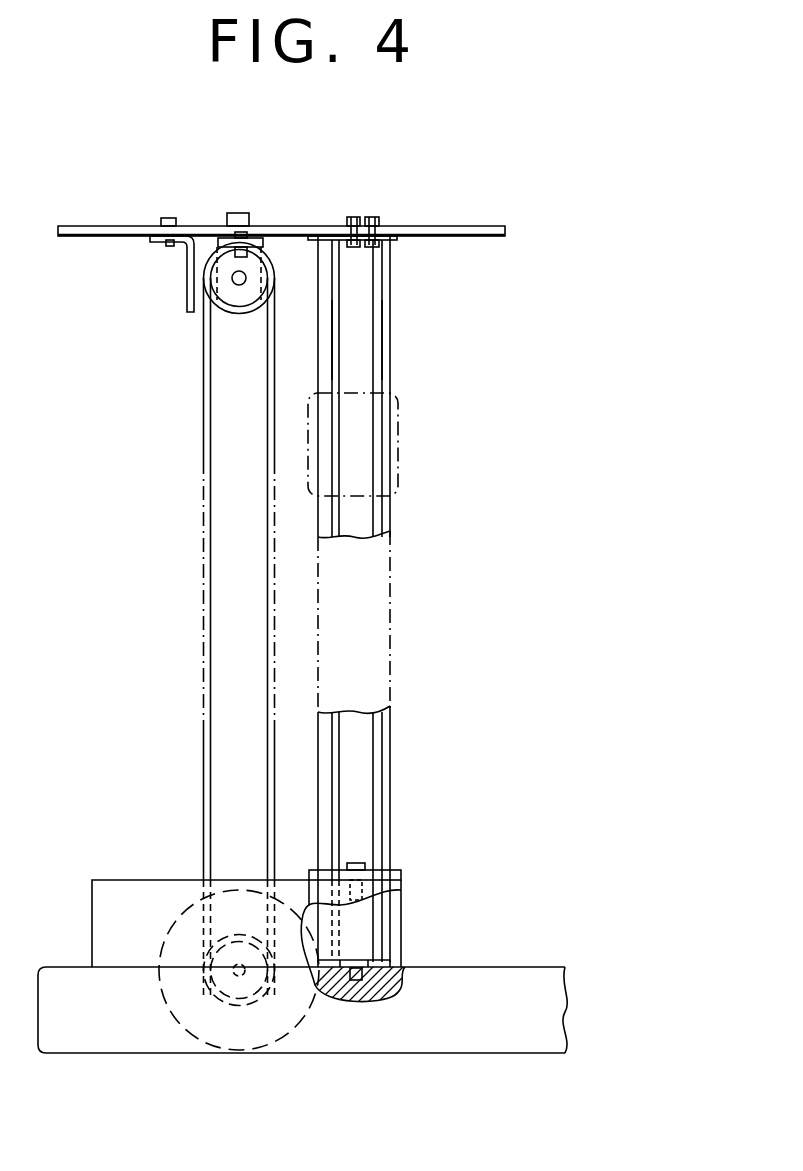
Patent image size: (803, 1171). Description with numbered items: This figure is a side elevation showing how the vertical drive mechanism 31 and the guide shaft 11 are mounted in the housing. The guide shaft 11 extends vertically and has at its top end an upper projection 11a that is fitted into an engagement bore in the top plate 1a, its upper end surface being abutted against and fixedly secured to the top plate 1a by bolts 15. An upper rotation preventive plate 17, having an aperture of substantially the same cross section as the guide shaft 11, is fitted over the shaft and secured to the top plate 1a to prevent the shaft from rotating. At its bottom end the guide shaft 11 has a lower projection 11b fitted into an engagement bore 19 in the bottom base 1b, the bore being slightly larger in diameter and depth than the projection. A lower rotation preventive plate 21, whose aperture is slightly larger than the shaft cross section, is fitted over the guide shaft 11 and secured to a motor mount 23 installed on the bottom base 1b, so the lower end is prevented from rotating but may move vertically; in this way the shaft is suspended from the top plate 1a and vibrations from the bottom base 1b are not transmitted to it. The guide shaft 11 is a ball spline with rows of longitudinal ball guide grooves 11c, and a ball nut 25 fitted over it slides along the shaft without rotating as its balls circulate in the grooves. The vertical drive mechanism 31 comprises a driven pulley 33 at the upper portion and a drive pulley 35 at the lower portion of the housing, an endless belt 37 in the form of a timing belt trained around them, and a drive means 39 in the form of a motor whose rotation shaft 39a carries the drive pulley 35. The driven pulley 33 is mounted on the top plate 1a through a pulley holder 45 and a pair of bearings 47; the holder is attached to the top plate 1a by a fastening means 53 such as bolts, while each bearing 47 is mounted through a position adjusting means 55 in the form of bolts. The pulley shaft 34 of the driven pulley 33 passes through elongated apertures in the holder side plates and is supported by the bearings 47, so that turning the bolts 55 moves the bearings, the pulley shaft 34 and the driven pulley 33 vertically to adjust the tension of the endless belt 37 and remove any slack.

The top plate 1a is at (283, 226).
The bottom base 1b is at (467, 1053).
The guide shaft 11 is at (392, 752).
The upper projection 11a is at (352, 217).
The lower projection 11b is at (390, 1000).
The ball guide grooves 11c is at (387, 327).
The bolts 15 is at (377, 217).
The upper rotation preventive plate 17 is at (392, 238).
The engagement bore 19 is at (352, 247).
The lower rotation preventive plate 21 is at (393, 868).
The motor mount 23 is at (172, 878).
The ball nut 25 is at (400, 422).
The vertical drive mechanism 31 is at (198, 610).
The driven pulley 33 is at (226, 312).
The pulley shaft 34 is at (230, 284).
The drive pulley 35 is at (248, 1000).
The endless belt 37 is at (204, 400).
The drive means 39 is at (180, 1028).
The rotation shaft 39a is at (225, 1000).
The pulley holder 45 is at (186, 280).
The bearings 47 is at (150, 238).
The fastening means 53 is at (168, 217).
The position adjusting means 55 is at (240, 212).